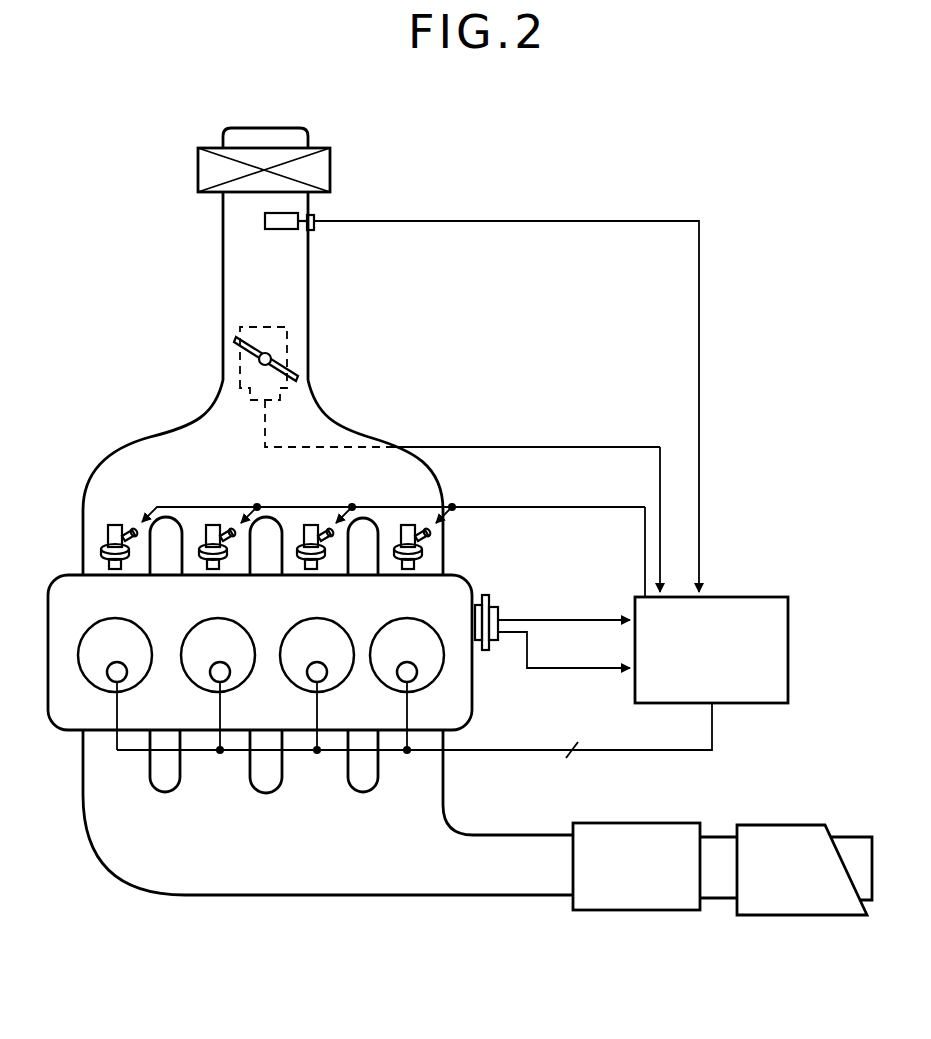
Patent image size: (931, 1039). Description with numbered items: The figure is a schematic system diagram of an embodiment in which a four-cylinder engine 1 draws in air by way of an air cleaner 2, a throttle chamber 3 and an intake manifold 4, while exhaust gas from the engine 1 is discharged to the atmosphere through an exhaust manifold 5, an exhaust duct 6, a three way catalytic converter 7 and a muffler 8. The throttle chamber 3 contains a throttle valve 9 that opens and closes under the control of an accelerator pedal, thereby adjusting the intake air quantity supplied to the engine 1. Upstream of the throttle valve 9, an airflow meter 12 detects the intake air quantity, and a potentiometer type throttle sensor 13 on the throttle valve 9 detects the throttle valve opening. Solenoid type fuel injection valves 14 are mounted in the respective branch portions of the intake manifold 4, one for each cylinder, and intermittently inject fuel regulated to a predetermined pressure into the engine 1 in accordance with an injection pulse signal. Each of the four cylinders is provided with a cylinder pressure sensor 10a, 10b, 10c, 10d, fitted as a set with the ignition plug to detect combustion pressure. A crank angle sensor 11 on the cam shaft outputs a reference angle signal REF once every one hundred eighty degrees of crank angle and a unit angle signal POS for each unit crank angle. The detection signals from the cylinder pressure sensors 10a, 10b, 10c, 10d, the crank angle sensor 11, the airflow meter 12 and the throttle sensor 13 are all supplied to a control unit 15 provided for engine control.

The engine 1 is at (476, 391).
The air cleaner 2 is at (198, 176).
The throttle chamber 3 is at (223, 278).
The intake manifold 4 is at (123, 447).
The exhaust manifold 5 is at (98, 840).
The exhaust duct 6 is at (513, 898).
The three way catalytic converter 7 is at (632, 911).
The muffler 8 is at (797, 916).
The throttle valve 9 is at (235, 340).
The cylinder pressure sensor 10a is at (107, 672).
The cylinder pressure sensor 10b is at (210, 672).
The cylinder pressure sensor 10c is at (307, 672).
The cylinder pressure sensor 10d is at (397, 672).
The crank angle sensor 11 is at (488, 595).
The airflow meter 12 is at (314, 218).
The throttle sensor 13 is at (275, 326).
The fuel injection valve 14 is at (110, 523).
The control unit 15 is at (789, 648).